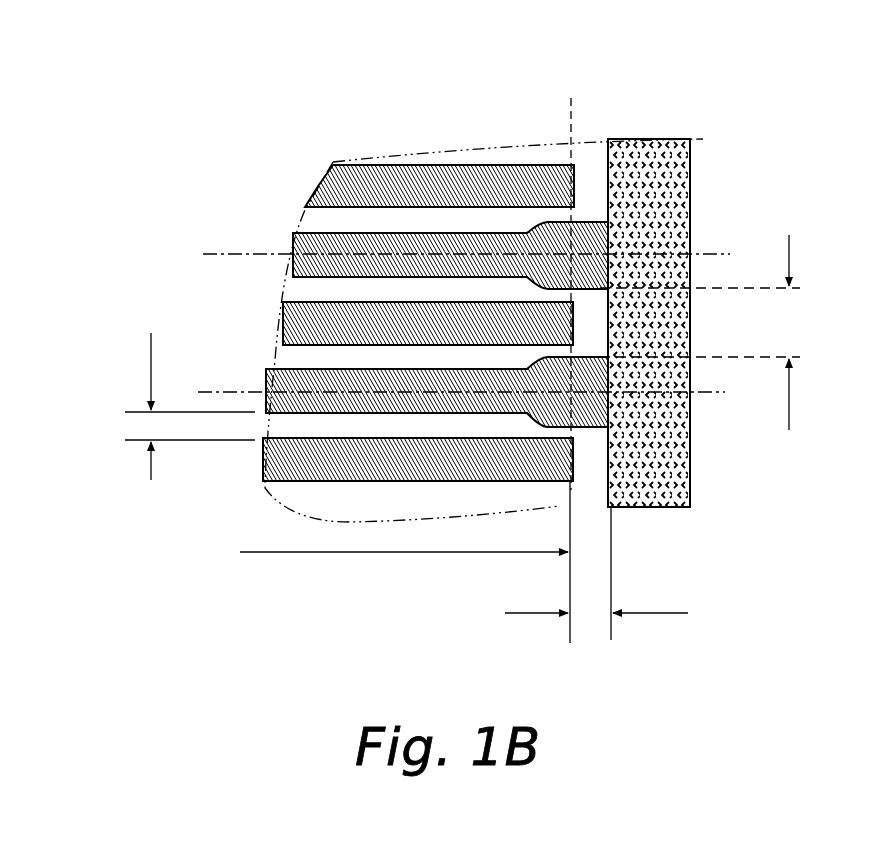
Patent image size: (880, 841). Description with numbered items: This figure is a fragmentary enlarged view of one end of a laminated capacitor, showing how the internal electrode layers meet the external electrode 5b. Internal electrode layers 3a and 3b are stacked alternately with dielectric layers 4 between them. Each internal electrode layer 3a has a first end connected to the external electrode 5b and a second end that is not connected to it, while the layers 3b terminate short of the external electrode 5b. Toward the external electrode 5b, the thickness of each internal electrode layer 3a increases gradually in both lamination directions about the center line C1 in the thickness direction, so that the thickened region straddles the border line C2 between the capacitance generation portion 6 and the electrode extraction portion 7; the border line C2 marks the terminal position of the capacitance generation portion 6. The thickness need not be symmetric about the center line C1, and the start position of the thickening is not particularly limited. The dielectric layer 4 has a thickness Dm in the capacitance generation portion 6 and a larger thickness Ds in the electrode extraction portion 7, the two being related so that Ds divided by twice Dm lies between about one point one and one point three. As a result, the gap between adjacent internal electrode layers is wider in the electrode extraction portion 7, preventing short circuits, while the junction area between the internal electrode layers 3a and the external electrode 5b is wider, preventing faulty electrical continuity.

The internal electrode layer 3a is at (462, 245).
The internal electrode layer 3b is at (403, 172).
The dielectric layer 4 is at (327, 218).
The external electrode 5b is at (645, 157).
The capacitance generation portion 6 is at (404, 569).
The electrode extraction portion 7 is at (596, 634).
The center line in the thickness direction C1 is at (224, 381).
The border line C2 is at (571, 351).
The thickness of the dielectric layer in the electrode extraction portion Ds is at (701, 332).
The thickness of the dielectric layer in the capacitance generation portion Dm is at (156, 406).